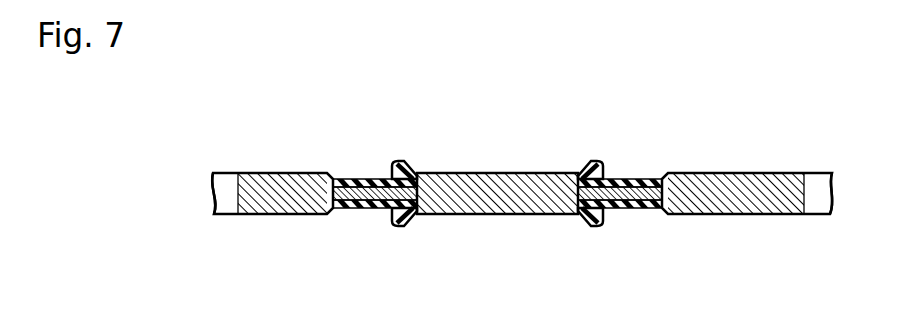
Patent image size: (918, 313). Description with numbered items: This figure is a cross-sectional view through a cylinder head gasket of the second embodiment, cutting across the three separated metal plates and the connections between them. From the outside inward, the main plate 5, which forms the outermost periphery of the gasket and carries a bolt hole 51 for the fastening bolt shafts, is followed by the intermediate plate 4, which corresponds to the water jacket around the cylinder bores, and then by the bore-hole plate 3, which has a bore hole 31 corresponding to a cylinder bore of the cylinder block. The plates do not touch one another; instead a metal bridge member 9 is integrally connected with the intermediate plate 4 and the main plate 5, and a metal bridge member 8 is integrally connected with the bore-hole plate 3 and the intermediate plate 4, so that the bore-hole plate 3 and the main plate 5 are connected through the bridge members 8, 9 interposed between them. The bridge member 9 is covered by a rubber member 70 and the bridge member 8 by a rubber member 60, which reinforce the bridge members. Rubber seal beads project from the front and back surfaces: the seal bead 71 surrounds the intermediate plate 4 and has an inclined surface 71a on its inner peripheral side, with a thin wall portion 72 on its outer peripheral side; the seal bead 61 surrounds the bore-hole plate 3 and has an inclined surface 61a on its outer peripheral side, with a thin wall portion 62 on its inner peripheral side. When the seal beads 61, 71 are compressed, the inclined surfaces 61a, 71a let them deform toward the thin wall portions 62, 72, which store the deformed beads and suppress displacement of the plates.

The bore-hole plate 3 is at (748, 189).
The intermediate plate 4 is at (466, 173).
The main plate 5 is at (272, 193).
The bridge member 8 is at (650, 179).
The bridge member 9 is at (360, 179).
The bore hole 31 is at (819, 214).
The bolt hole 51 is at (226, 214).
The rubber member 60 is at (630, 175).
The seal bead 61 is at (584, 204).
The inclined surface 61a is at (588, 166).
The thin wall portion 62 is at (631, 208).
The rubber member 70 is at (377, 175).
The seal bead 71 is at (419, 205).
The inclined surface 71a is at (408, 162).
The thin wall portion 72 is at (360, 208).